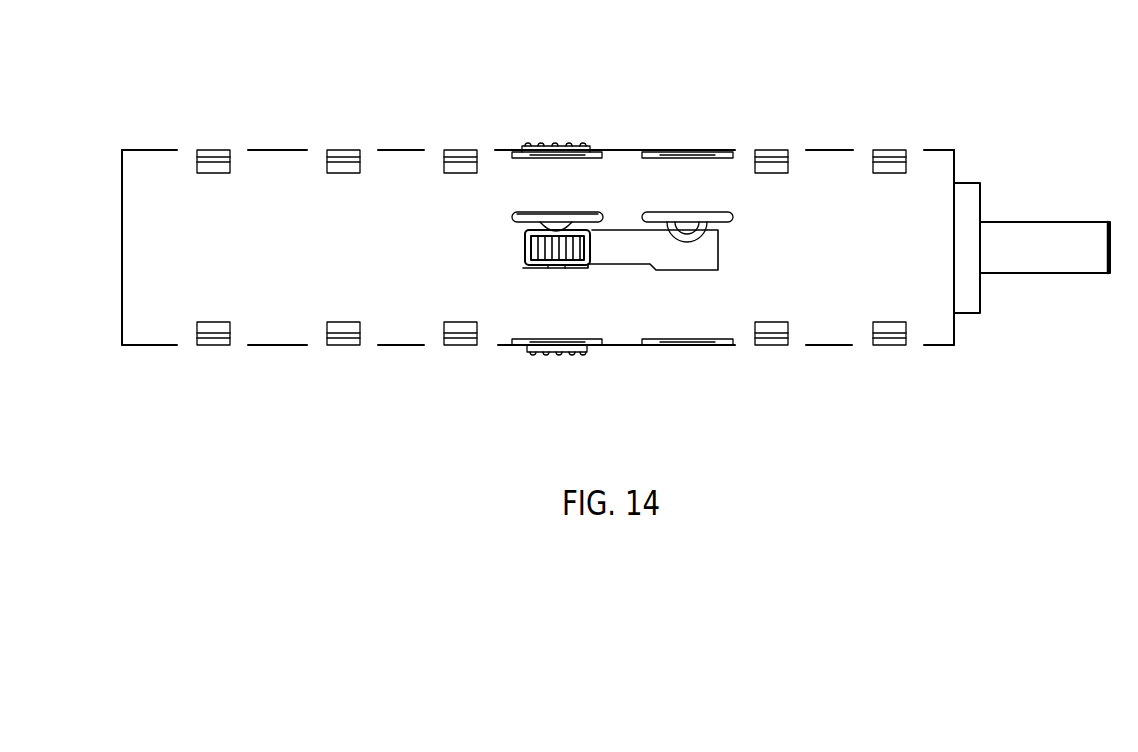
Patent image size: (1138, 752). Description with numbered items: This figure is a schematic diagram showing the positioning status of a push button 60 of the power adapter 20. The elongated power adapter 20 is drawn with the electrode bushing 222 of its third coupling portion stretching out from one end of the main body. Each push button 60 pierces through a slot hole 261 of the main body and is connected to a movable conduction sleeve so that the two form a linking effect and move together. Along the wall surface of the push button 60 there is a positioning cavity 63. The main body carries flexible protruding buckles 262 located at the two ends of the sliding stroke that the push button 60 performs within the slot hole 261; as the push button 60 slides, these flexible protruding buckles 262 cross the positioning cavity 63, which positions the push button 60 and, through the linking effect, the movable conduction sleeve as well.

The power adapter 20 is at (277, 178).
The electrode bushing 222 is at (1035, 257).
The flexible protruding buckle 262 is at (555, 232).
The positioning cavity 63 is at (520, 216).
The push button 60 is at (525, 268).
The slot hole 261 is at (716, 250).